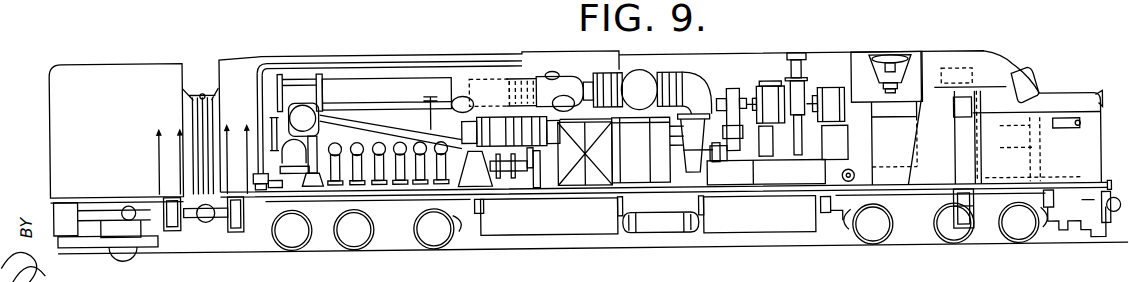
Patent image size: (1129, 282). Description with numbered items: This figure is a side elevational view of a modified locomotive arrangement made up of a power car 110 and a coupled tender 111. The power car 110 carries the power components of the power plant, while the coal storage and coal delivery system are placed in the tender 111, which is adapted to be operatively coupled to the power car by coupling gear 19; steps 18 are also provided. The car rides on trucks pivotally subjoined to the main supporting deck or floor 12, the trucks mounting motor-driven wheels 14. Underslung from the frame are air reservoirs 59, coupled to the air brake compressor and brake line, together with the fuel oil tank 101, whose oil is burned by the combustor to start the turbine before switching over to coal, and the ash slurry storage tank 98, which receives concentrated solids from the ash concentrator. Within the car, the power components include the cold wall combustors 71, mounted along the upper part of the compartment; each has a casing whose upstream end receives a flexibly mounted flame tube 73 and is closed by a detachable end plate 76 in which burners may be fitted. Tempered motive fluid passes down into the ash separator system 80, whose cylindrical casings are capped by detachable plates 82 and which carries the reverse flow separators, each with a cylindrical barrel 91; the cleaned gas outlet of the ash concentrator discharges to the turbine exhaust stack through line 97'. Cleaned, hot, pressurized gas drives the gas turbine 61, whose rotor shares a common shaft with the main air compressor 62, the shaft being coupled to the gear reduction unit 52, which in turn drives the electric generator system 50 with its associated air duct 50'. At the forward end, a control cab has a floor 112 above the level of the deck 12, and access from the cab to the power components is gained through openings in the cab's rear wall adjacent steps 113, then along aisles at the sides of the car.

The power car 110 is at (738, 50).
The tender 111 is at (143, 55).
The main supporting deck or floor 12 is at (423, 186).
The motor-driven wheels 14 is at (297, 246).
The steps 18 is at (237, 222).
The coupling gear 19 is at (207, 220).
The main generator system 50 is at (765, 133).
The air duct 50' is at (814, 103).
The gear reduction unit 52 is at (731, 92).
The air reservoirs 59 is at (673, 228).
The gas turbine 61 is at (690, 127).
The main air compressor 62 is at (642, 158).
The cold wall combustors 71 is at (414, 82).
The flame tubes 73 is at (510, 80).
The end plates 76 is at (278, 70).
The ash separator 80 is at (391, 132).
The detachable plates 82 is at (268, 116).
The cylindrical body or barrel 91 is at (385, 163).
The line 97' is at (389, 52).
The ash slurry storage tank 98 is at (570, 220).
The fuel oil tank 101 is at (778, 222).
The cab floor 112 is at (1043, 165).
The steps 113 is at (933, 198).